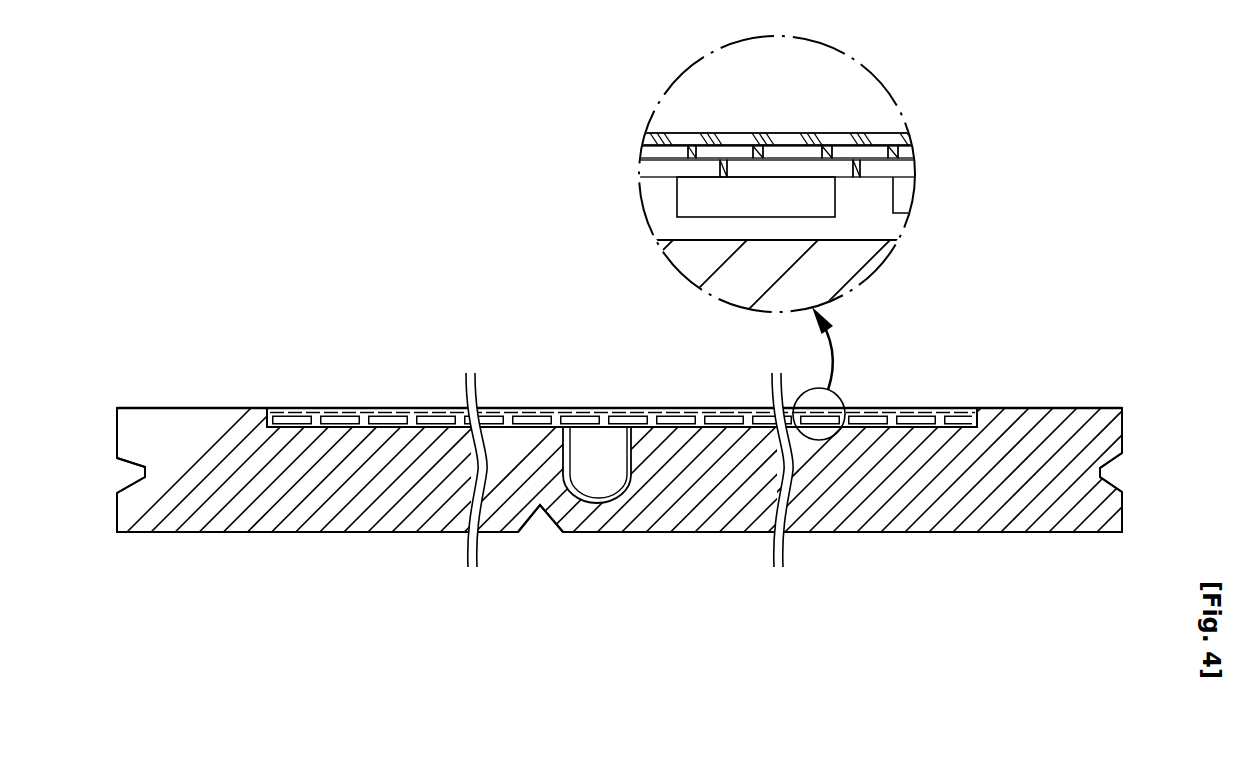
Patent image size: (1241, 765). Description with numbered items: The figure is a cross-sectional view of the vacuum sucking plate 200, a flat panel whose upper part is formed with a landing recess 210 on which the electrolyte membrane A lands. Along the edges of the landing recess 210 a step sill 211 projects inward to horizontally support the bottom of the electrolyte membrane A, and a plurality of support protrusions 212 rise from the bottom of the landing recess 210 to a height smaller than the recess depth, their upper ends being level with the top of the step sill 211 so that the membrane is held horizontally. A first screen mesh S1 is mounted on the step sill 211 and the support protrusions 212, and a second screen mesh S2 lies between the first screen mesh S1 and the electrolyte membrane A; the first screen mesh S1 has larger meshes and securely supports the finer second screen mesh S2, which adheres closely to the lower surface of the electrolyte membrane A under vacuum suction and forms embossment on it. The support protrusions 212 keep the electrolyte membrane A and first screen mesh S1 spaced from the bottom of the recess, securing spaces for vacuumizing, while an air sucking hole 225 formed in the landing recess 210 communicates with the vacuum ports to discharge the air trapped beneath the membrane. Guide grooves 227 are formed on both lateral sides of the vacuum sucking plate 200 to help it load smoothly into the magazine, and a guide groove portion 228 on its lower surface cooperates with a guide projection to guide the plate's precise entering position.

The vacuum sucking plate 200 is at (683, 638).
The landing recess 210 is at (903, 408).
The step sill 211 is at (930, 410).
The support protrusions 212 is at (404, 407).
The air sucking holes 225 is at (605, 437).
The guide grooves 227 is at (128, 478).
The guide groove portion 228 is at (538, 523).
The electrolyte membrane A is at (737, 238).
The first screen mesh S1 is at (865, 166).
The second screen mesh S2 is at (907, 147).